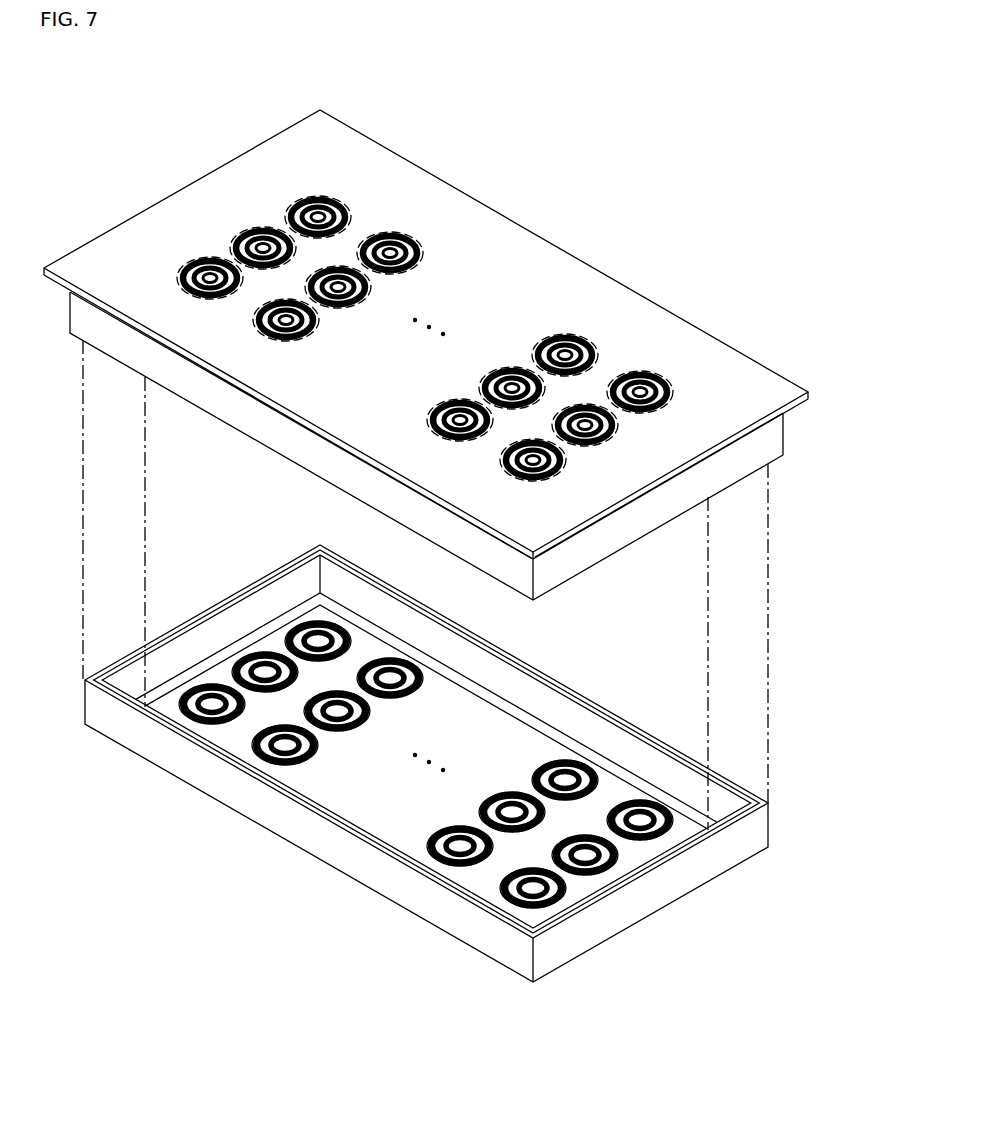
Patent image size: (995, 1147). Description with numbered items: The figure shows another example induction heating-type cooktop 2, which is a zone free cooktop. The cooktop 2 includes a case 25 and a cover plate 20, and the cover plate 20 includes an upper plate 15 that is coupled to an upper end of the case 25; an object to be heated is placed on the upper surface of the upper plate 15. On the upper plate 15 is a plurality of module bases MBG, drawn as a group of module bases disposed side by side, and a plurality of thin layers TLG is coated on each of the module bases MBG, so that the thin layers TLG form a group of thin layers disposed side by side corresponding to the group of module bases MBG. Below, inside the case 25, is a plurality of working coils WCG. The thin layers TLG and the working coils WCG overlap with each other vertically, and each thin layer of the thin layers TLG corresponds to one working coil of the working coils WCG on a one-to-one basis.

The induction heating-type cooktop 2 is at (193, 85).
The upper plate 15 is at (598, 308).
The cover plate 20 is at (770, 328).
The case 25 is at (770, 826).
The plurality of thin layers TLG is at (340, 186).
The plurality of module bases MBG is at (416, 222).
The plurality of working coils WCG is at (434, 873).